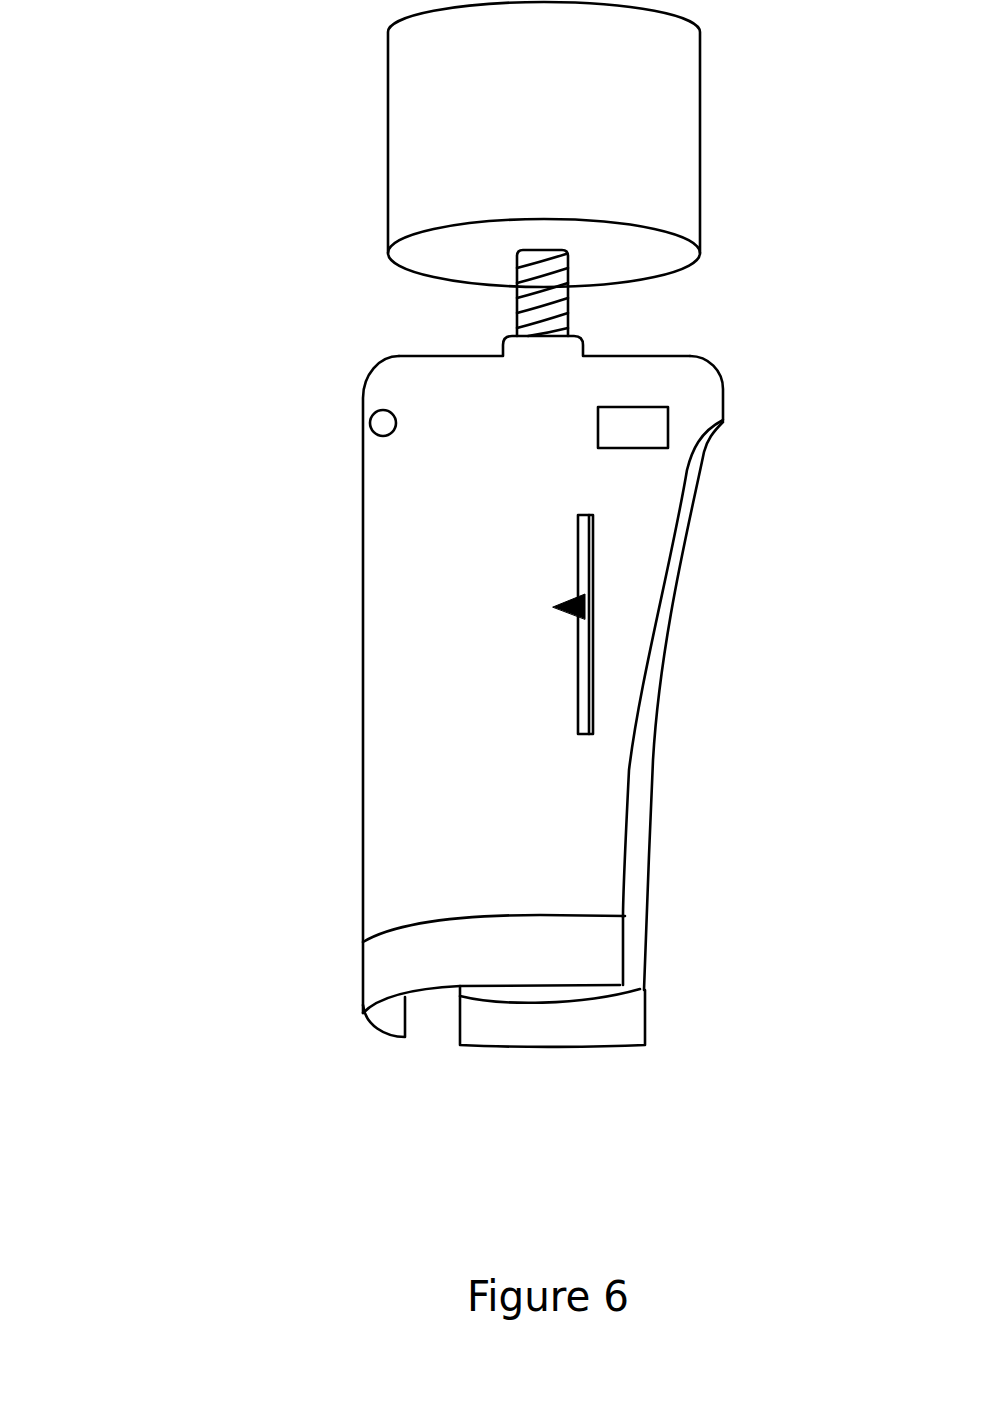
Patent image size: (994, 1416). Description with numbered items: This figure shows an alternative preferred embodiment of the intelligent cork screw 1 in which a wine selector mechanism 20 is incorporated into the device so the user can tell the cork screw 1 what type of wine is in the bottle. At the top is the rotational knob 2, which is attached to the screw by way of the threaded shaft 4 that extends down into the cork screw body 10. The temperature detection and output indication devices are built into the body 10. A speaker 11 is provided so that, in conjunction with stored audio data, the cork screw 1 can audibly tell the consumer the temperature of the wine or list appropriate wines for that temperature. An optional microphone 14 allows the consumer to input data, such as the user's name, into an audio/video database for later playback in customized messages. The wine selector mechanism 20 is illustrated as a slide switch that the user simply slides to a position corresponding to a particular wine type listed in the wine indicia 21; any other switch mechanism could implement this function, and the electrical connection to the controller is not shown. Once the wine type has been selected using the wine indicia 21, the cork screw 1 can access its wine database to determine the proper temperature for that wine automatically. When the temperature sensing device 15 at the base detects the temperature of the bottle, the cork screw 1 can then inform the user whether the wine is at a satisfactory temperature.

The cork screw 1 is at (190, 146).
The rotational knob 2 is at (658, 122).
The threaded shaft 4 is at (570, 300).
The cork screw body 10 is at (402, 800).
The speaker 11 is at (643, 423).
The microphone 14 is at (370, 423).
The temperature sensing device 15 is at (603, 1030).
The wine selector mechanism 20 is at (567, 597).
The wine indicia 21 is at (450, 632).